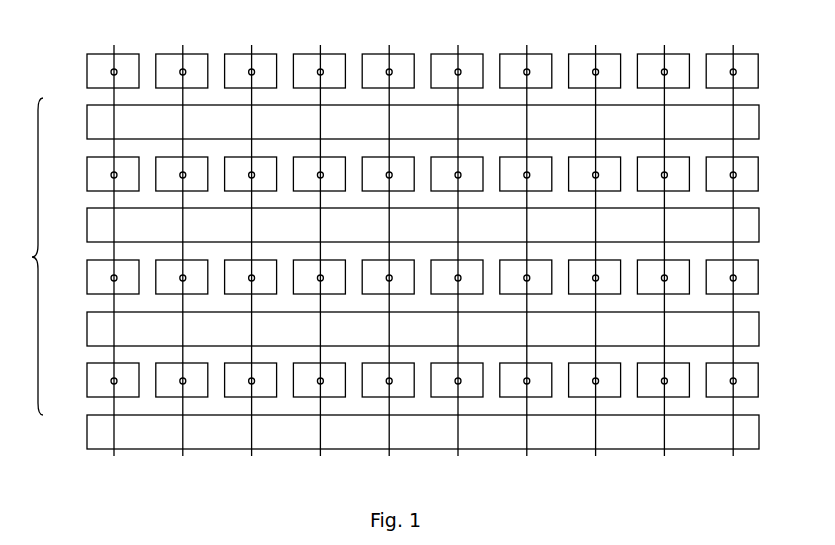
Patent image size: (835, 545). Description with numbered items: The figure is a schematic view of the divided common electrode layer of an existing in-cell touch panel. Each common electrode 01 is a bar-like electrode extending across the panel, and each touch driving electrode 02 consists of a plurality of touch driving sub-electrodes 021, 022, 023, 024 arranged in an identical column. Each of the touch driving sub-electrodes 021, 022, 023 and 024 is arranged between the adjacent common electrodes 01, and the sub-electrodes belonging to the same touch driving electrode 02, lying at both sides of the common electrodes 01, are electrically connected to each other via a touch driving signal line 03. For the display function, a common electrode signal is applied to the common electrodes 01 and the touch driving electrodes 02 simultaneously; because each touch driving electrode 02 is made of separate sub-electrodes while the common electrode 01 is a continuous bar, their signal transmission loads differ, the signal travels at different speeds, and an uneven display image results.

The common electrode 01 is at (760, 120).
The touch driving electrode 02 is at (25, 256).
The touch driving sub-electrode 021 is at (401, 68).
The touch driving sub-electrode 022 is at (87, 178).
The touch driving sub-electrode 023 is at (87, 278).
The touch driving sub-electrode 024 is at (87, 378).
The touch driving signal line 03 is at (183, 53).